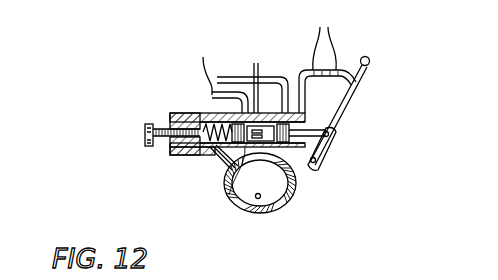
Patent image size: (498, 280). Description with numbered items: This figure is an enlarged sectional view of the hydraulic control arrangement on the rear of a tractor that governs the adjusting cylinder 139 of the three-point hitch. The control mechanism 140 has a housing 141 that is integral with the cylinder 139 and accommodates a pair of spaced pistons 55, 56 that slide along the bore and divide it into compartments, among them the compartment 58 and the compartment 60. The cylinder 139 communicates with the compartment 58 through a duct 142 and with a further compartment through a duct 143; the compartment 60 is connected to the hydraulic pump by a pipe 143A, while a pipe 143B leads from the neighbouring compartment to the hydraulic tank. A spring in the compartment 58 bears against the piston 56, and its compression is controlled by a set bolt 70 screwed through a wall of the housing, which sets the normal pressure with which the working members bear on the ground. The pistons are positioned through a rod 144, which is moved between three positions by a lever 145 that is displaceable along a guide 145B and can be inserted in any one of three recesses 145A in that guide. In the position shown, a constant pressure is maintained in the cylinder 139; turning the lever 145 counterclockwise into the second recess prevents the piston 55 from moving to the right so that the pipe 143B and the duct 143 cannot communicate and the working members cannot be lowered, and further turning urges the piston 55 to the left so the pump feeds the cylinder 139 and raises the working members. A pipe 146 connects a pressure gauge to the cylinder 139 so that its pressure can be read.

The piston 55 is at (271, 91).
The piston 56 is at (212, 100).
The compartment 58 is at (212, 160).
The compartment 60 is at (260, 180).
The set bolt 70 is at (144, 133).
The adjusting cylinder 139 is at (296, 185).
The control mechanism 140 is at (172, 158).
The housing 141 is at (190, 170).
The duct 142 is at (212, 176).
The duct 143 is at (232, 196).
The pipe 143A is at (218, 78).
The pipe 143B is at (218, 46).
The rod 144 is at (341, 124).
The lever 145 is at (350, 104).
The recesses 145A is at (323, 27).
The guide 145B is at (370, 65).
The pipe 146 is at (256, 64).